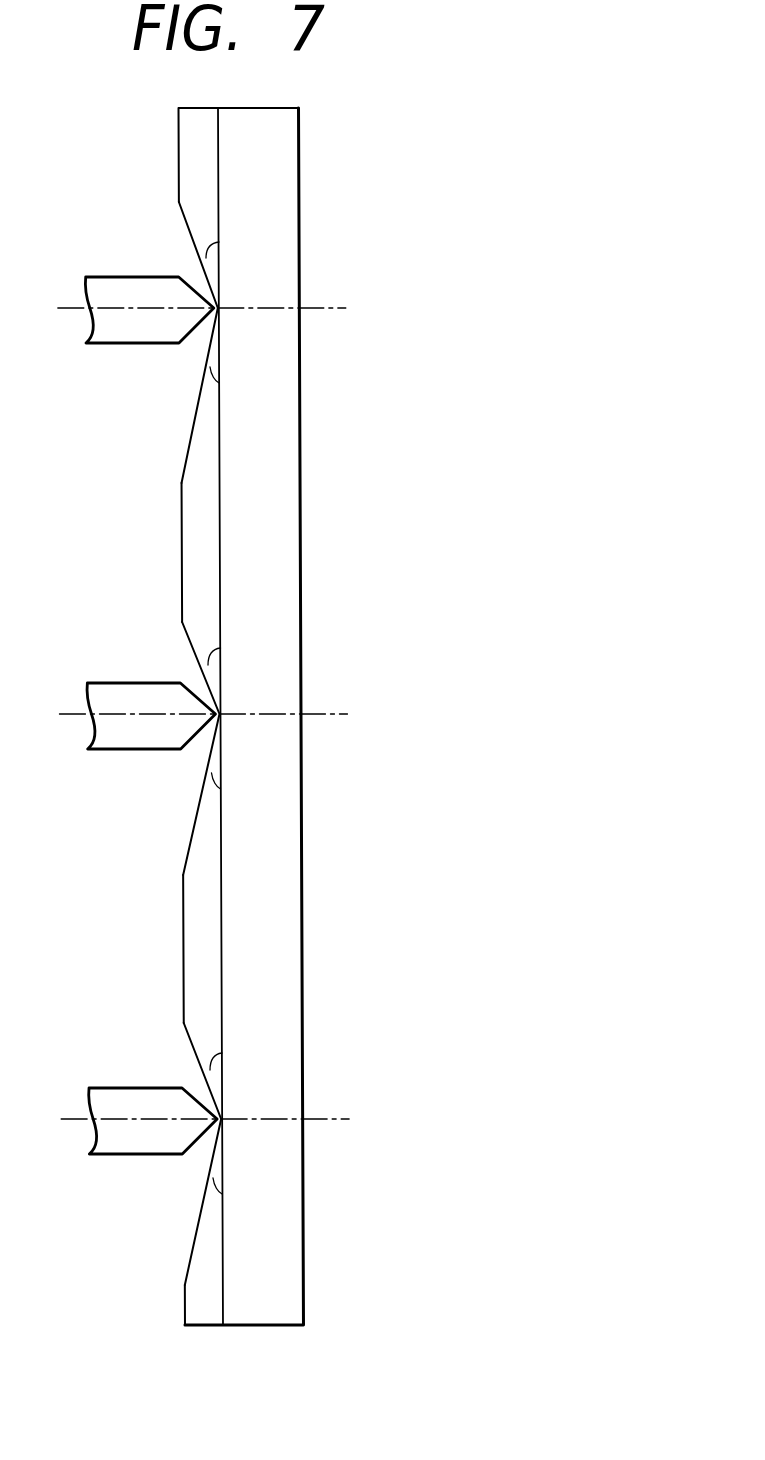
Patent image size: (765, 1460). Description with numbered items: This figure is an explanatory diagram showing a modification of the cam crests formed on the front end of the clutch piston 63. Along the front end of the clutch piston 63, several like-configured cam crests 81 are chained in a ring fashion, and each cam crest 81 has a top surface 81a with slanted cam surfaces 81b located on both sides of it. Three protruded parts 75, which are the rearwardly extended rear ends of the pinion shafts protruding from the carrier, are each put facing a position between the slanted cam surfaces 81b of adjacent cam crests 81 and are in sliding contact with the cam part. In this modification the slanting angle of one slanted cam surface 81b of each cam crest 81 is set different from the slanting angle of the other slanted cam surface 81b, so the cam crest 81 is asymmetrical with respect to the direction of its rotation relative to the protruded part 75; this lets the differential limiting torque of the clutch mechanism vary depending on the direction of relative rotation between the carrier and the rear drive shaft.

The clutch piston 63 is at (283, 123).
The cam crest 81 is at (200, 155).
The top surface 81a is at (182, 543).
The slanted cam surface 81b is at (200, 220).
The protruded part 75 is at (125, 277).